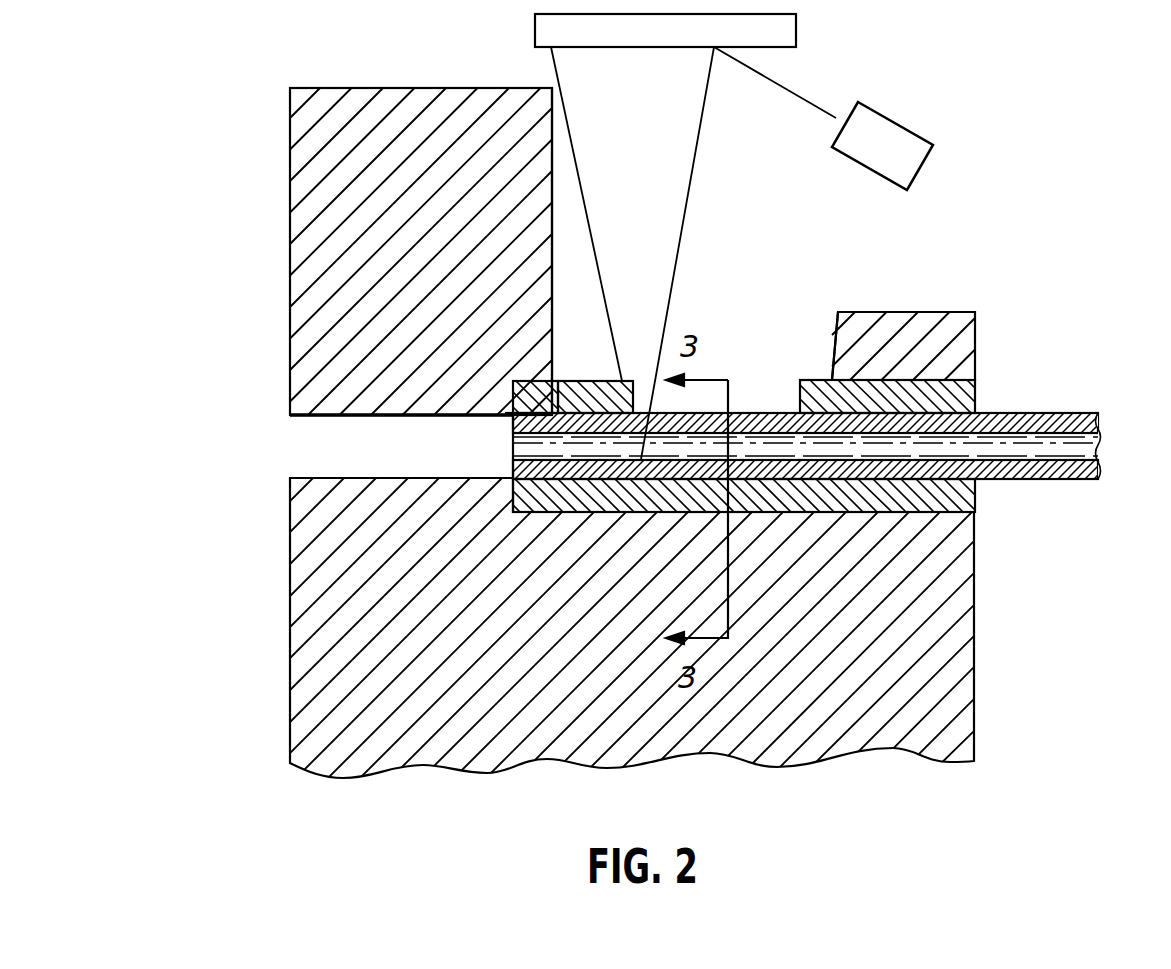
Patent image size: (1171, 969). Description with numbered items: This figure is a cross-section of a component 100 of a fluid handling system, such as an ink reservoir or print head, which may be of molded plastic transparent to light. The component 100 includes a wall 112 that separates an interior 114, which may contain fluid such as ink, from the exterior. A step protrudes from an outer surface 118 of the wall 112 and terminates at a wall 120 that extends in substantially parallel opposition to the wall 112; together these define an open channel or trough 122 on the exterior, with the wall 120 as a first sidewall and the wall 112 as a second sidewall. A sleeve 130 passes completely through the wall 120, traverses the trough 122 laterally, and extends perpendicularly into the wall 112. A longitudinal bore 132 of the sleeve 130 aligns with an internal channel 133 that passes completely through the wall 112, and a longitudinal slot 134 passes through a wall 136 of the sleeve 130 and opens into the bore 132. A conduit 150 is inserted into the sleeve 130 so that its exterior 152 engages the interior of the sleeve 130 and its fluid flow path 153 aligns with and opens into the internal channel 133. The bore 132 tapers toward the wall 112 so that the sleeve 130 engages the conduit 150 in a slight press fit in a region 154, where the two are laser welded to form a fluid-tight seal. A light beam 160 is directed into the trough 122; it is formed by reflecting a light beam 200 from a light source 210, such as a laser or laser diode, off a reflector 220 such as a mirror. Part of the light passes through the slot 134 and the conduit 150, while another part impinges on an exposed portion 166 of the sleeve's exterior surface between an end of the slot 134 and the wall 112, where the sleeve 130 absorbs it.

The component 100 is at (420, 783).
The wall 112 is at (422, 88).
The interior 114 is at (252, 345).
The outer surface 118 is at (552, 118).
The wall 120 is at (933, 312).
The open channel (trough) 122 is at (823, 320).
The sleeve 130 is at (975, 393).
The longitudinal bore 132 is at (513, 410).
The internal channel (fluid flow passage) 133 is at (303, 477).
The longitudinal slot 134 is at (764, 393).
The wall of sleeve 136 is at (936, 507).
The conduit 150 is at (1052, 413).
The exterior of conduit 152 is at (745, 413).
The fluid flow path 153 is at (1090, 445).
The region 154 is at (560, 381).
The light beam 160 is at (688, 188).
The exposed portion 166 is at (620, 381).
The light beam 200 is at (836, 112).
The light source 210 is at (917, 138).
The reflector 220 is at (797, 25).